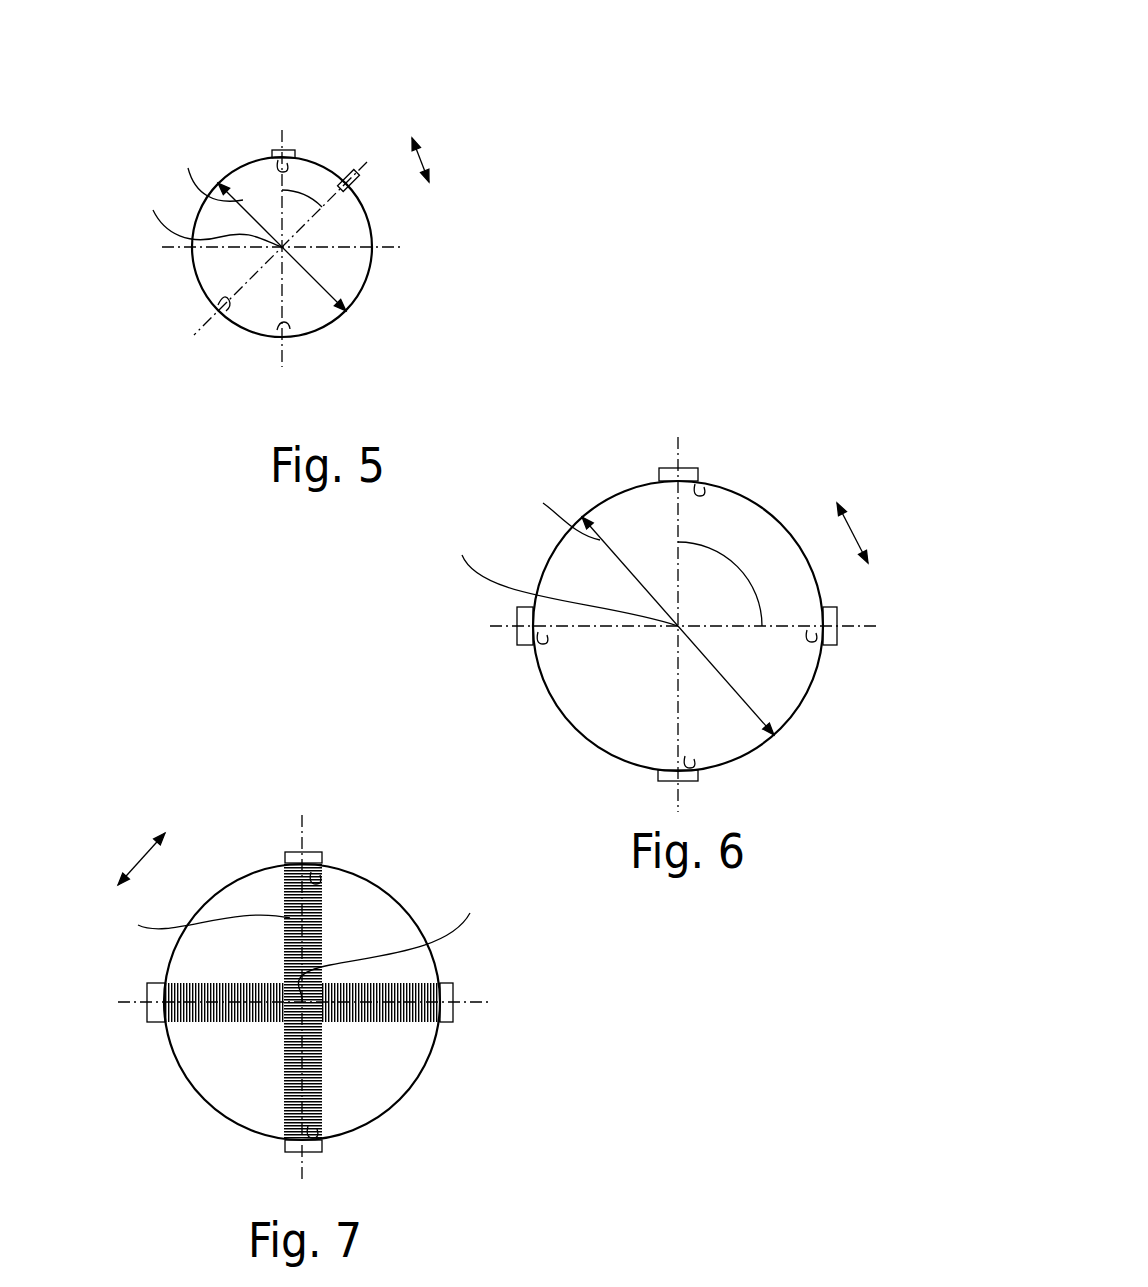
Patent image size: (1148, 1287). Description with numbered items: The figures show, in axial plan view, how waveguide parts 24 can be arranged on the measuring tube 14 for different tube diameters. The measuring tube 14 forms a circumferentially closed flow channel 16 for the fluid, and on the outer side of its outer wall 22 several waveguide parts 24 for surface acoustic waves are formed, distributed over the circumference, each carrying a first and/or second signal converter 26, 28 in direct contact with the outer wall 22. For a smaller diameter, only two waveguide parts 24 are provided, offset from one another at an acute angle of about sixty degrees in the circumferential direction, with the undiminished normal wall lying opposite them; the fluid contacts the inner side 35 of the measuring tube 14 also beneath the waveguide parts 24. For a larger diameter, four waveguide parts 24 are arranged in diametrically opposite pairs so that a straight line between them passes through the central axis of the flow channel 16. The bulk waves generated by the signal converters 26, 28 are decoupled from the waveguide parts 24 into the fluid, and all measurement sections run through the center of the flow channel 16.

In FIG. 5, the measuring tube 14 is at (263, 197).
In FIG. 6, the measuring tube 14 is at (670, 601).
In FIG. 7, the measuring tube 14 is at (317, 976).
In FIG. 5, the flow channel 16 is at (353, 272).
In FIG. 6, the flow channel 16 is at (600, 730).
In FIG. 7, the flow channel 16 is at (233, 1100).
In FIG. 5, the outer wall 22 is at (233, 177).
In FIG. 6, the outer wall 22 is at (630, 485).
In FIG. 7, the outer wall 22 is at (187, 1078).
In FIG. 5, the waveguide part 24 is at (278, 173).
In FIG. 6, the waveguide part 24 is at (707, 488).
In FIG. 7, the waveguide part 24 is at (317, 877).
In FIG. 5, the first signal converter 26 is at (349, 122).
In FIG. 6, the first signal converter 26 is at (670, 605).
In FIG. 7, the first signal converter 26 is at (317, 974).
In FIG. 5, the second signal converter 28 is at (288, 150).
In FIG. 6, the second signal converter 28 is at (687, 468).
In FIG. 7, the second signal converter 28 is at (300, 852).
In FIG. 5, the inner side 35 is at (229, 316).